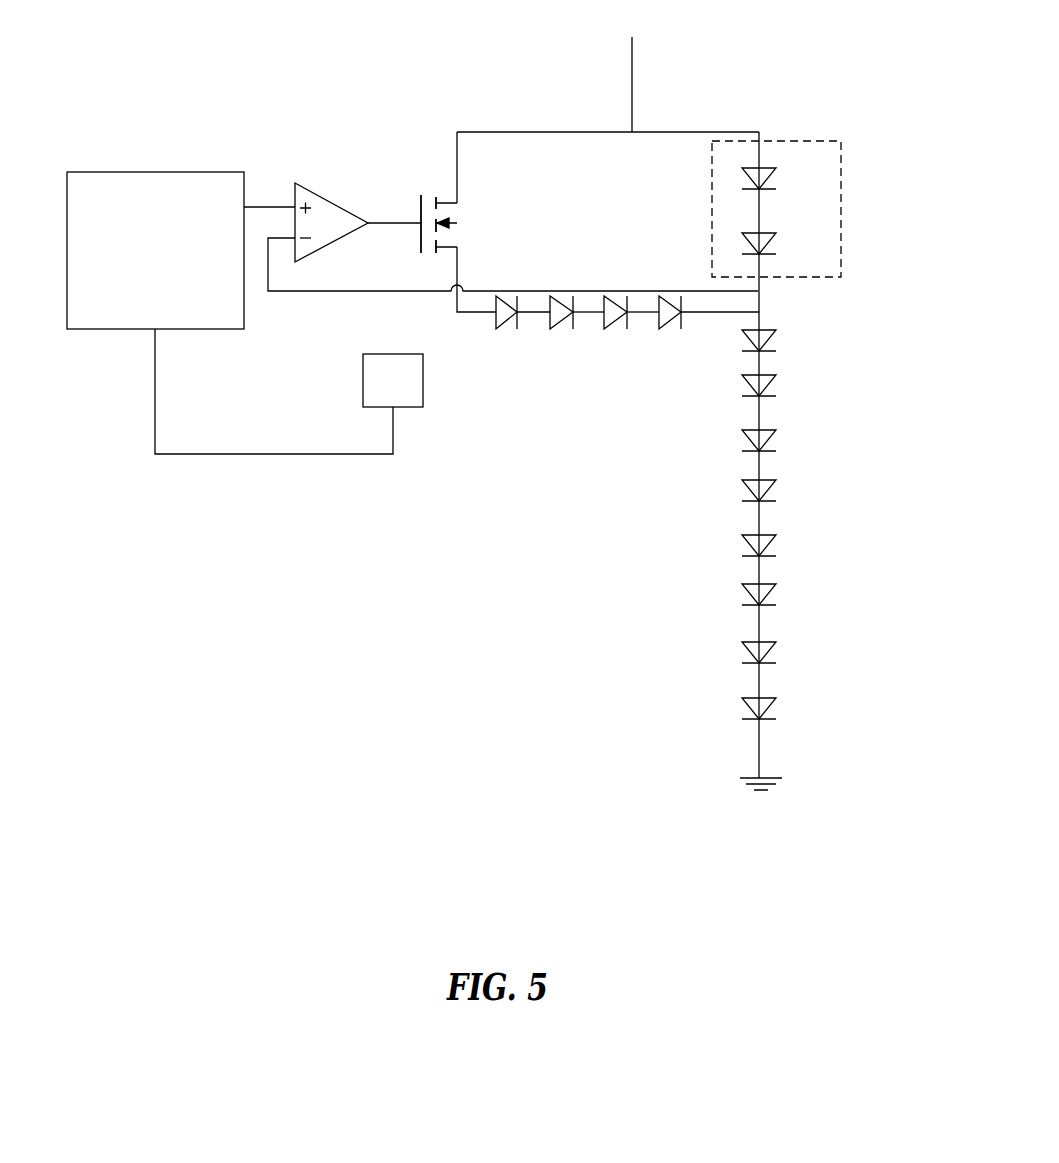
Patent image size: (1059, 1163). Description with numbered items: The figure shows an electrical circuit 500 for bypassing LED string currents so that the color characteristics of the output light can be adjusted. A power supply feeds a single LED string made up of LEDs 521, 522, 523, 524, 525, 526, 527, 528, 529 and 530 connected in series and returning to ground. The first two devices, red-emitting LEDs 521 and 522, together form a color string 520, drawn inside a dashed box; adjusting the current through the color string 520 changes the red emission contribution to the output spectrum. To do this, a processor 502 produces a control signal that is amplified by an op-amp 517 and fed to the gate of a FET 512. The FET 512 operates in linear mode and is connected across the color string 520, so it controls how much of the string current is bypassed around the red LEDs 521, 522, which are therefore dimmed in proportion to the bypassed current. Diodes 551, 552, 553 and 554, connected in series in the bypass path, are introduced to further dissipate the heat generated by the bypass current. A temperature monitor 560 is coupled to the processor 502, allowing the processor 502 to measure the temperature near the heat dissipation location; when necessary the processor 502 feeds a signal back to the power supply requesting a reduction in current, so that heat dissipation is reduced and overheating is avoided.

The electrical circuit 500 is at (339, 86).
The processor 502 is at (155, 250).
The FET 512 is at (470, 222).
The op-amp 517 is at (358, 205).
The color string 520 is at (801, 207).
The LED 521 is at (784, 173).
The LED 522 is at (784, 239).
The LED 523 is at (784, 336).
The LED 524 is at (784, 381).
The LED 525 is at (784, 437).
The LED 526 is at (784, 487).
The LED 527 is at (784, 541).
The LED 528 is at (784, 591).
The LED 529 is at (784, 649).
The LED 530 is at (784, 705).
The diode 551 is at (520, 328).
The diode 552 is at (573, 328).
The diode 553 is at (628, 328).
The diode 554 is at (706, 328).
The temperature monitor 560 is at (368, 380).